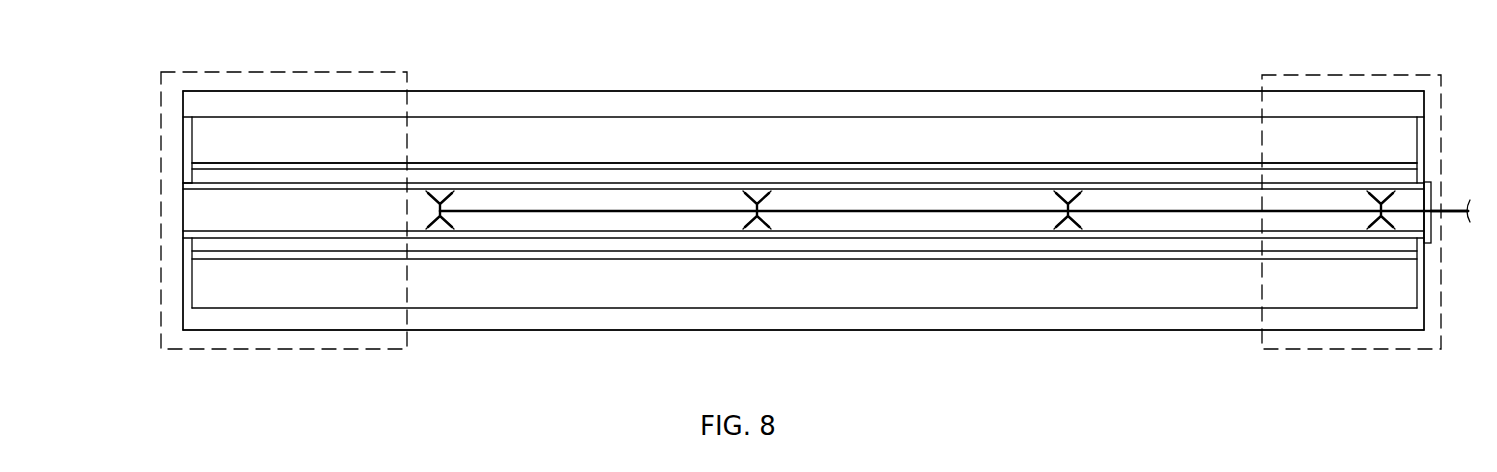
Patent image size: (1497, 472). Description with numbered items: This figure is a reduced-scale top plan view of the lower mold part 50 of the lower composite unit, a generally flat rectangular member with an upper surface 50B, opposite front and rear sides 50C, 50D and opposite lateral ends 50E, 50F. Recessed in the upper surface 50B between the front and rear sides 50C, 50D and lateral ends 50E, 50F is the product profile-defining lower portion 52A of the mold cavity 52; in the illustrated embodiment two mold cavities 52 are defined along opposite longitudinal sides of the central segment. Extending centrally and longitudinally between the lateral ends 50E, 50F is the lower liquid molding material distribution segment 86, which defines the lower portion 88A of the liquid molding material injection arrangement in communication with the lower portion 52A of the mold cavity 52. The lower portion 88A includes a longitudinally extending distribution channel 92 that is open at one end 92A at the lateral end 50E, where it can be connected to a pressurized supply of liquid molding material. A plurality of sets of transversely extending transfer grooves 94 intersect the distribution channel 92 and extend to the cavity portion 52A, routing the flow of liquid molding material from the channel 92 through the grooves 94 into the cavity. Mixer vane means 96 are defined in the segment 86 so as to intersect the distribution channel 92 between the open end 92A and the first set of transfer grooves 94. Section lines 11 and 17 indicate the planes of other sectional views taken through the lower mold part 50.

The section line 11 is at (1295, 75).
The section line 17 is at (303, 72).
The lower mold part 50 is at (1030, 91).
The upper surface 50B is at (696, 100).
The front side 50C is at (745, 330).
The rear side 50D is at (608, 91).
The lateral end 50E is at (1430, 278).
The lateral end 50F is at (183, 278).
The mold cavity 52 is at (1076, 146).
The lower portion of mold cavity 52A is at (843, 118).
The lower liquid molding material distribution segment 86 is at (183, 200).
The lower portion of injection arrangement 88A is at (874, 167).
The distribution channel 92 is at (627, 212).
The open end of distribution channel 92A is at (1403, 215).
The transfer grooves 94 is at (443, 230).
The mixer vane means 96 is at (1413, 227).